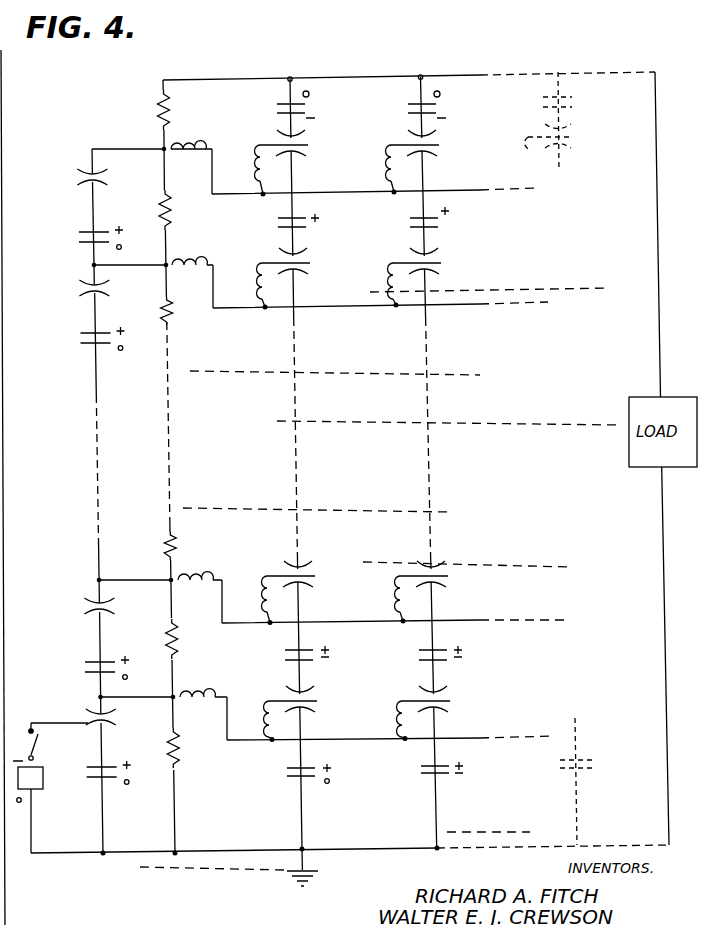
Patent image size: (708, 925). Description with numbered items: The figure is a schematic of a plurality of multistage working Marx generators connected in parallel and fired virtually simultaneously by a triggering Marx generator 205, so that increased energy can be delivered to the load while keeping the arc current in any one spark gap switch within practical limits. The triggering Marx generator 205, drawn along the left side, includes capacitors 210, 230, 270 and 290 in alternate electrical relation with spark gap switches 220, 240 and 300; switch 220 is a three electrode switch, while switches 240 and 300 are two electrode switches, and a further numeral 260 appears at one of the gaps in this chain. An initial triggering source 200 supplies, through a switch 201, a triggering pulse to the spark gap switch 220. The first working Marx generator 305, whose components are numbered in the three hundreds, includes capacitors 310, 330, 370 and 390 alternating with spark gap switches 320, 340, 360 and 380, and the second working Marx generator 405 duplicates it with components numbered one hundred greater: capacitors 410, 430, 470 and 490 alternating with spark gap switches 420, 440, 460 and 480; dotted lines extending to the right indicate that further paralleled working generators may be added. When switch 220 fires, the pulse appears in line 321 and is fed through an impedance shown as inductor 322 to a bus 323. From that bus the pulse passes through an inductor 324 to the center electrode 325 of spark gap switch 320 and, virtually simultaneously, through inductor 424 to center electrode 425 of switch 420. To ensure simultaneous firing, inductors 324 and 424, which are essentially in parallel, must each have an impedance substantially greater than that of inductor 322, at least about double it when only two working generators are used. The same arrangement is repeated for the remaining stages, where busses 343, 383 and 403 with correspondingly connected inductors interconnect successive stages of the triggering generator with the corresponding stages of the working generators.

The initial triggering source 200 is at (45, 810).
The switch 201 is at (29, 730).
The triggering Marx generator 205 is at (103, 860).
The capacitor 210 is at (90, 755).
The spark gap switch 220 is at (76, 700).
The capacitor 230 is at (89, 655).
The spark gap switch 240 is at (77, 601).
The spark gap 260 is at (72, 289).
The capacitor 270 is at (79, 355).
The capacitor 290 is at (77, 222).
The spark gap switch 300 is at (70, 173).
The working Marx generator 305 is at (293, 66).
The capacitor 310 is at (316, 762).
The spark gap switch 320 is at (326, 688).
The line 321 is at (130, 700).
The inductor 322 is at (196, 702).
The bus 323 is at (238, 745).
The inductor 324 is at (269, 700).
The center electrode 325 is at (319, 699).
The capacitor 330 is at (309, 643).
The spark gap switch 340 is at (319, 575).
The bus 343 is at (241, 622).
The spark gap switch 360 is at (315, 262).
The capacitor 370 is at (307, 212).
The spark gap switch 380 is at (312, 143).
The bus 383 is at (229, 306).
The capacitor 390 is at (316, 104).
The bus 403 is at (228, 192).
The working Marx generator 405 is at (425, 64).
The capacitor 410 is at (455, 785).
The spark gap switch 420 is at (451, 689).
The inductor 424 is at (405, 725).
The center electrode 425 is at (452, 700).
The capacitor 430 is at (453, 640).
The spark gap switch 440 is at (453, 574).
The spark gap switch 460 is at (449, 261).
The capacitor 470 is at (449, 220).
The spark gap switch 480 is at (446, 143).
The capacitor 490 is at (448, 105).